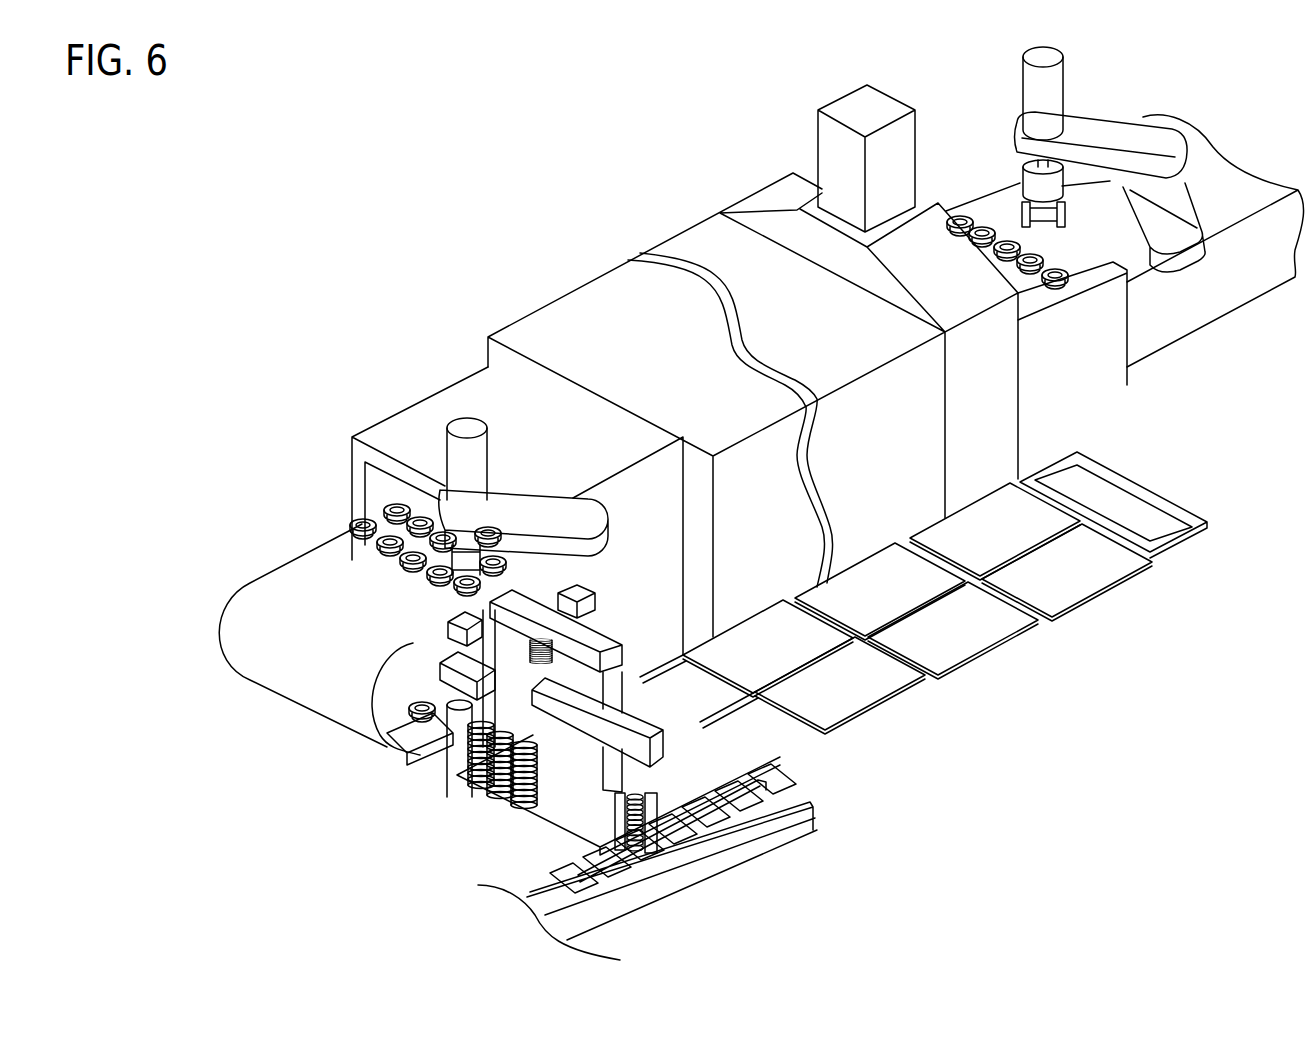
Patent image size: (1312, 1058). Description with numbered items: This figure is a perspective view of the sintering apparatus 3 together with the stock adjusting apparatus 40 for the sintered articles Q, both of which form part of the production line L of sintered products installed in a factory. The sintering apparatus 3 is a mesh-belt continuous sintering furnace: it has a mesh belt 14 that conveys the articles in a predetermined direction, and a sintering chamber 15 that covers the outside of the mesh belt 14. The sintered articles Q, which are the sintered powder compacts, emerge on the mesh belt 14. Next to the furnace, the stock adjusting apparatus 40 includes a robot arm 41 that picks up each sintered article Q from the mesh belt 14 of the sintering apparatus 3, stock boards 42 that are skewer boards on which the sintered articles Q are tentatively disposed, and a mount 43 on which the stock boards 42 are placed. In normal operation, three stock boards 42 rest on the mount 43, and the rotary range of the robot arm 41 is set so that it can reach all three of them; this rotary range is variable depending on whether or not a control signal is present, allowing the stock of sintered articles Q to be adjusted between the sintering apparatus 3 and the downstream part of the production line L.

The sintering apparatus 3 is at (680, 228).
The mesh belt 14 is at (300, 572).
The sintering chamber 15 is at (592, 303).
The stock adjusting apparatus 40 is at (953, 718).
The robot arm 41 is at (528, 500).
The stock boards 42 is at (1017, 633).
The mount 43 is at (1155, 520).
The production line L is at (729, 146).
The sintered article Q is at (348, 532).